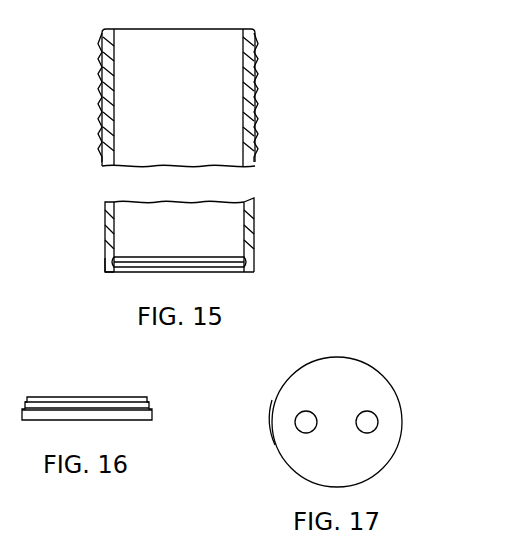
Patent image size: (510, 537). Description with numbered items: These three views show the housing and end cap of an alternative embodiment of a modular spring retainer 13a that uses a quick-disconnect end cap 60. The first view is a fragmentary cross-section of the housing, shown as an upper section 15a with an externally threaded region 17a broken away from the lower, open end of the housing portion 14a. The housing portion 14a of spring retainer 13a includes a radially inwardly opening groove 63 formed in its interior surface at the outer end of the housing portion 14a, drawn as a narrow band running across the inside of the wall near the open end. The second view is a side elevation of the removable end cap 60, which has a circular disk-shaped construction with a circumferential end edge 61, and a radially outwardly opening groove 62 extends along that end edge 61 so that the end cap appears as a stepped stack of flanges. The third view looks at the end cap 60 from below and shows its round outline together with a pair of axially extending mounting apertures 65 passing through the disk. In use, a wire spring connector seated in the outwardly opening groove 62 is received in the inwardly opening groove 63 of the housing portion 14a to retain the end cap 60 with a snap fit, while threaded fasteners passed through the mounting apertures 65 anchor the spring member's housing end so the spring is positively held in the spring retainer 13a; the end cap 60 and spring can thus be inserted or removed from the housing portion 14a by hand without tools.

In FIG. 15, the upper container section 15a is at (218, 93).
In FIG. 15, the external thread 17a is at (257, 80).
In FIG. 15, the housing portion 14a is at (256, 224).
In FIG. 15, the spring retainer 13a is at (105, 271).
In FIG. 15, the radially inwardly opening groove 63 is at (133, 262).
In FIG. 16, the removable end cap 60 is at (57, 397).
In FIG. 17, the removable end cap 60 is at (300, 383).
In FIG. 16, the circumferential end edge 61 is at (145, 398).
In FIG. 17, the circumferential end edge 61 is at (272, 415).
In FIG. 16, the radially outwardly opening groove 62 is at (152, 404).
In FIG. 17, the mounting apertures 65 is at (367, 414).